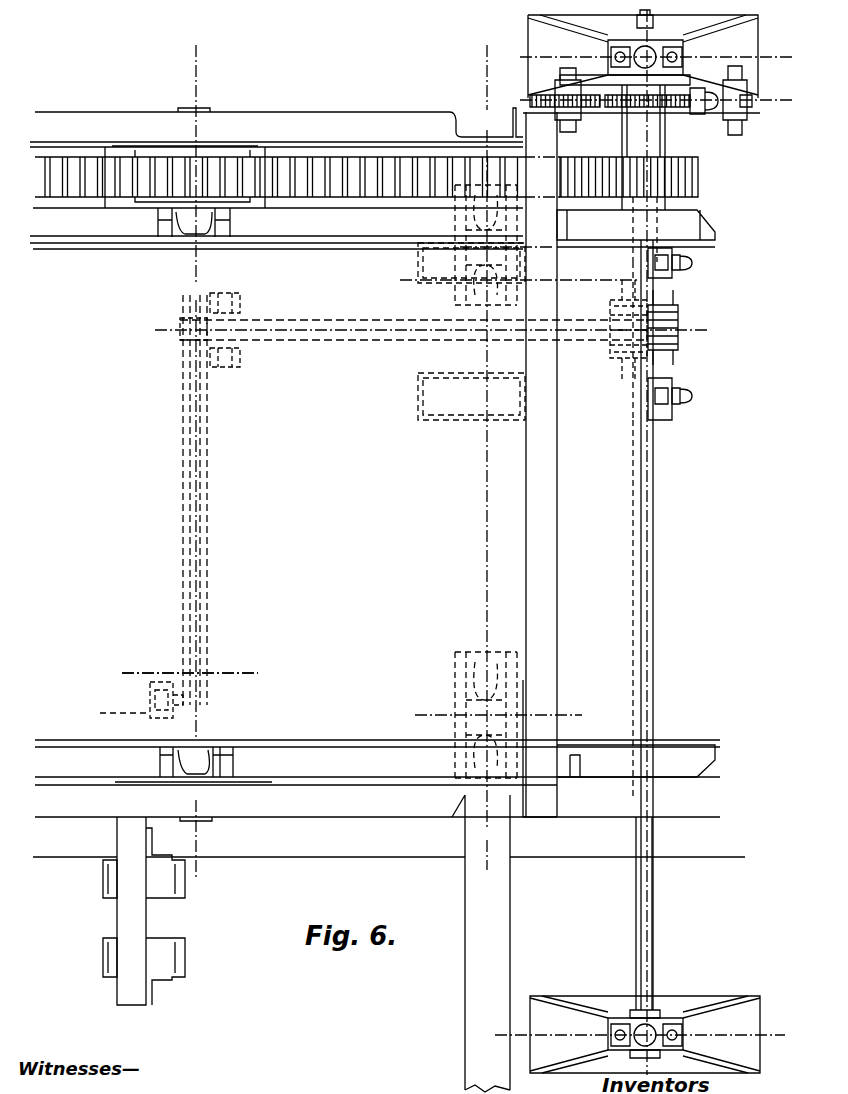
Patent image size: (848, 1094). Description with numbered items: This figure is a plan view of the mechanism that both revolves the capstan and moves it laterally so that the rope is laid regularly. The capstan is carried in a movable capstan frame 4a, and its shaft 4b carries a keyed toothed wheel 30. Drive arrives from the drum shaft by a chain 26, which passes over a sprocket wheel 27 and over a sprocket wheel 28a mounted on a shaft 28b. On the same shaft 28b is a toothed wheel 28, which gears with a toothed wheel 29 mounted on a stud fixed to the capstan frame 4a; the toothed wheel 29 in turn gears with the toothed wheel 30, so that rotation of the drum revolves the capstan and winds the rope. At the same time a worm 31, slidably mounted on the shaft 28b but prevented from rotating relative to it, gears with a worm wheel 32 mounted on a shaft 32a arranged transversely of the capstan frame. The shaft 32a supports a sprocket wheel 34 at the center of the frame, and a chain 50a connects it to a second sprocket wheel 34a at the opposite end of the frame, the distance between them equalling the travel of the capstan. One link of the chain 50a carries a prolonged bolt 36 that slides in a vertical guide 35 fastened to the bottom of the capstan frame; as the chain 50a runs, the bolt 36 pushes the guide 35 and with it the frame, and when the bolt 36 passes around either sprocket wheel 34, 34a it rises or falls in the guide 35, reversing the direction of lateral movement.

The capstan frame 4a is at (367, 118).
The shaft of the capstan 4b is at (198, 108).
The chain 26 is at (785, 100).
The sprocket wheel 27 is at (528, 100).
The toothed wheel 28 is at (687, 175).
The sprocket wheel 28a is at (683, 108).
The shaft 28b is at (633, 140).
The toothed wheel 29 is at (577, 185).
The toothed wheel 30 is at (279, 200).
The worm 31 is at (680, 325).
The worm wheel 32 is at (660, 370).
The shaft 32a is at (362, 343).
The sprocket wheel 34 is at (185, 327).
The sprocket wheel 34a is at (214, 675).
The vertical guide 35 is at (111, 711).
The bolt 36 is at (165, 690).
The chain 50a is at (203, 508).